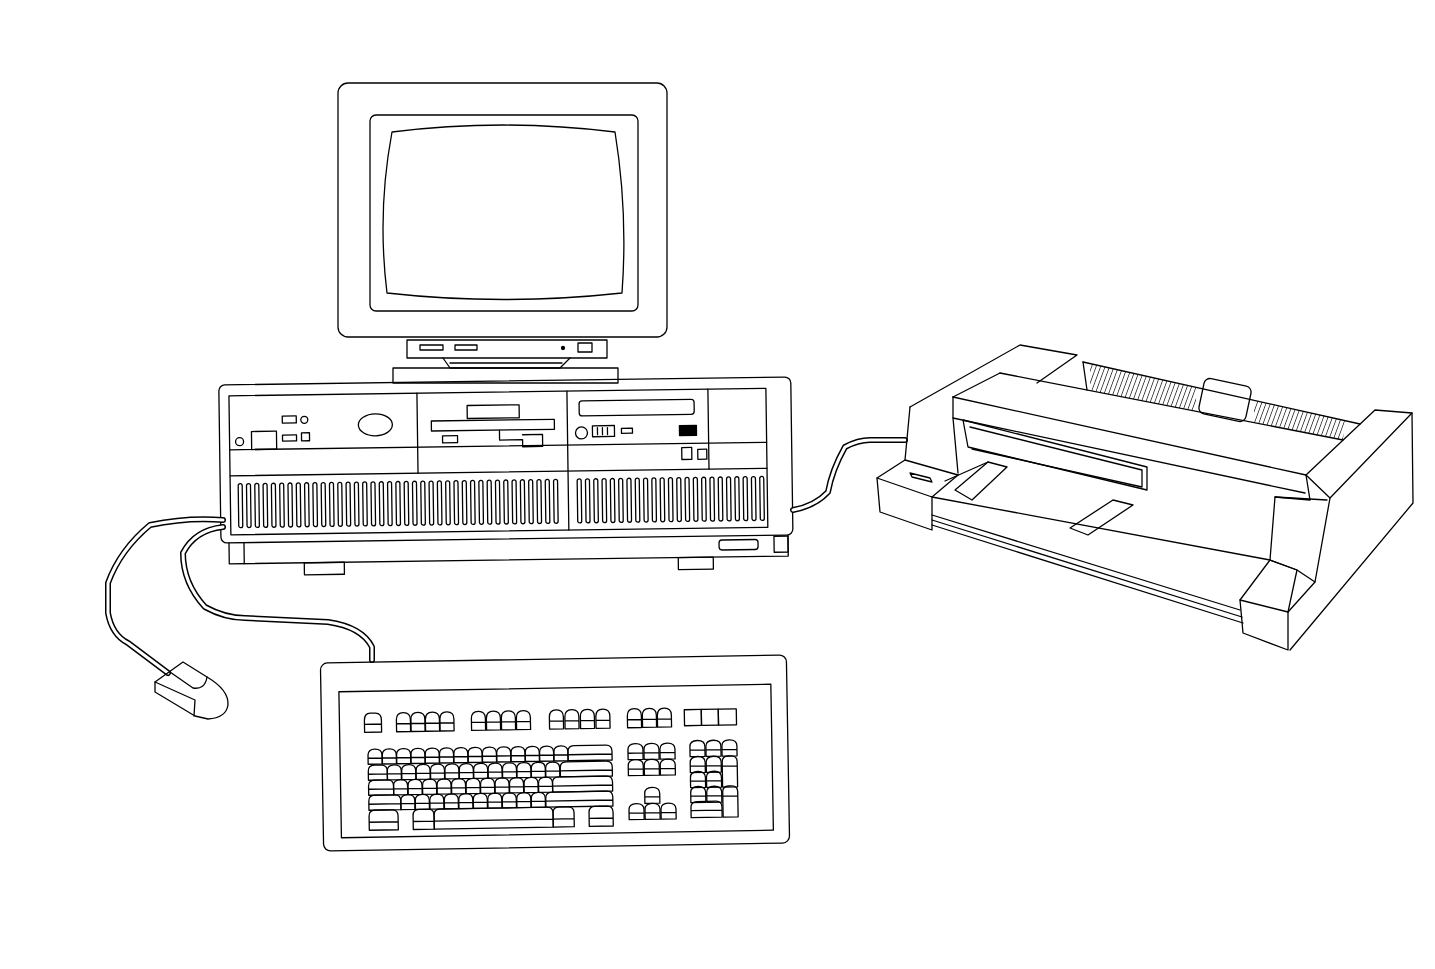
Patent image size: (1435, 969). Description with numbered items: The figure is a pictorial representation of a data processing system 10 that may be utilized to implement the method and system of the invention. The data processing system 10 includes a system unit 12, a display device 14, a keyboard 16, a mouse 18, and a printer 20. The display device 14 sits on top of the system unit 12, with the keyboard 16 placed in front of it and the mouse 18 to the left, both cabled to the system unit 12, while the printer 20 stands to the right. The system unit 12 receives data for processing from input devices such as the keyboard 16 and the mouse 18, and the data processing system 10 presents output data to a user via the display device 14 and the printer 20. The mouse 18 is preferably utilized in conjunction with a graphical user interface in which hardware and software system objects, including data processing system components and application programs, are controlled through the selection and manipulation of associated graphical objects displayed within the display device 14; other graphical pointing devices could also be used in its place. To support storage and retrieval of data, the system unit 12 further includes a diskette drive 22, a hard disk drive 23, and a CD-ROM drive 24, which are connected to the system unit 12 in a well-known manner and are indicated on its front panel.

The data processing system 10 is at (863, 126).
The system unit 12 is at (508, 466).
The display device 14 is at (677, 227).
The keyboard 16 is at (630, 652).
The mouse 18 is at (183, 703).
The printer 20 is at (935, 372).
The diskette drive 22 is at (487, 437).
The hard disk drive 23 is at (643, 460).
The CD-ROM drive 24 is at (658, 408).